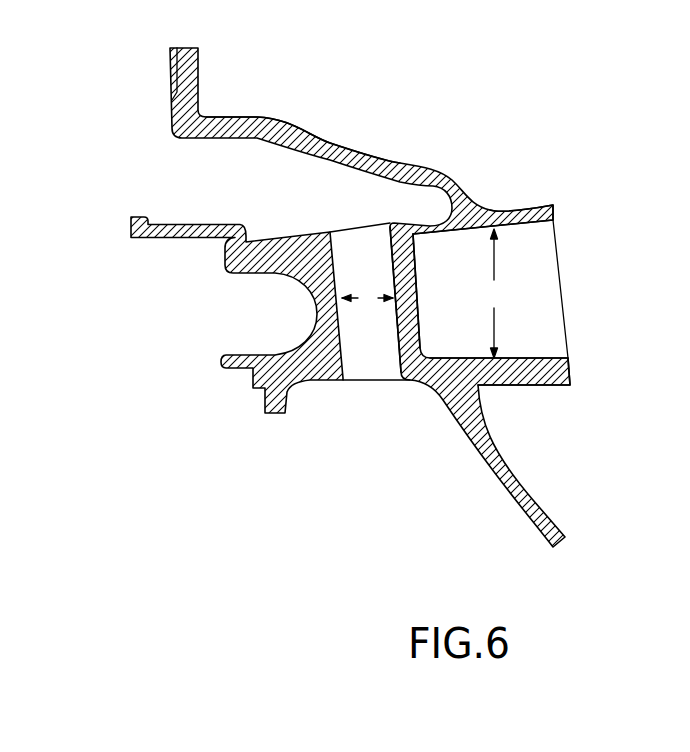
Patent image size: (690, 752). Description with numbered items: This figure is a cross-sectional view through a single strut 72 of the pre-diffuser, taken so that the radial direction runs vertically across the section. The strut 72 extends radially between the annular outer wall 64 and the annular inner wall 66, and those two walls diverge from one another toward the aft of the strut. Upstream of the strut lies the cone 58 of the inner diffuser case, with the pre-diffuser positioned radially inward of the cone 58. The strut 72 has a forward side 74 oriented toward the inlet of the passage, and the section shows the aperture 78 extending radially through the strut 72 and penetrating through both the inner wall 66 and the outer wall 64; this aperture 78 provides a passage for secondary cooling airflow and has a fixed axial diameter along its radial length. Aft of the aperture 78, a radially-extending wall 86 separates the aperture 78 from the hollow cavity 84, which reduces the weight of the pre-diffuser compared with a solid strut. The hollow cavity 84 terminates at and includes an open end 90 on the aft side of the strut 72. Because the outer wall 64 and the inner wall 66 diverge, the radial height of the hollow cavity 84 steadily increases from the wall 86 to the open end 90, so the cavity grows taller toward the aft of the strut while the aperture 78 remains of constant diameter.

The cone 58 is at (338, 143).
The outer wall 64 is at (520, 206).
The inner wall 66 is at (545, 384).
The strut 72 is at (602, 178).
The forward side 74 is at (680, 260).
The aperture 78 is at (367, 357).
The hollow cavity 84 is at (530, 283).
The wall 86 is at (413, 300).
The open end 90 is at (563, 308).